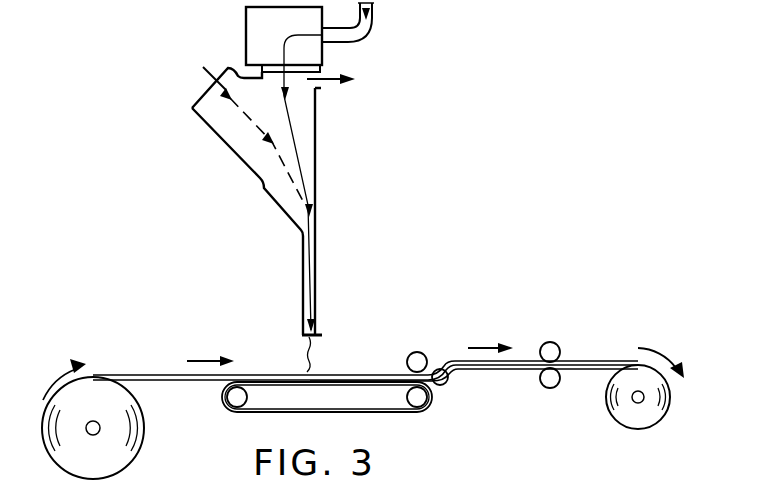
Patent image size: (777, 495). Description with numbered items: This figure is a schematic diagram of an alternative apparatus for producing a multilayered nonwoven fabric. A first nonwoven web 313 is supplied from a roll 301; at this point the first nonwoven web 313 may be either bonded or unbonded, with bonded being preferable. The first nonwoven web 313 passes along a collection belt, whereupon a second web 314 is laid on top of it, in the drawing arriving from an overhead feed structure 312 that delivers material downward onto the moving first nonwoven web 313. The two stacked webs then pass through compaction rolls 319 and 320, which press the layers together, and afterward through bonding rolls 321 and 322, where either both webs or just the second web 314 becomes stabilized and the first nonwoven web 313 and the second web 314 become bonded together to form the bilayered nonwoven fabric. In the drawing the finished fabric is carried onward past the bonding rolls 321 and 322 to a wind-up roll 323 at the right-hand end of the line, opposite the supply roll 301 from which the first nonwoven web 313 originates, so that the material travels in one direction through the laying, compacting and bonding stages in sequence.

The roll 301 is at (143, 440).
The feed hopper and chute 312 is at (324, 177).
The first nonwoven web 313 is at (148, 373).
The second web 314 is at (340, 360).
The compaction roll 319 is at (418, 351).
The compaction roll 320 is at (424, 398).
The bonding roll 321 is at (552, 342).
The bonding roll 322 is at (549, 389).
The take-up roll 323 is at (668, 395).